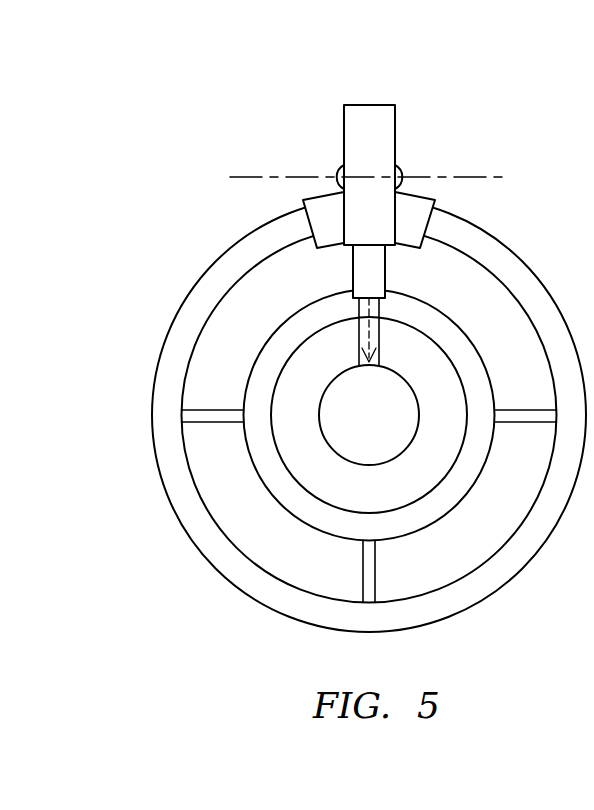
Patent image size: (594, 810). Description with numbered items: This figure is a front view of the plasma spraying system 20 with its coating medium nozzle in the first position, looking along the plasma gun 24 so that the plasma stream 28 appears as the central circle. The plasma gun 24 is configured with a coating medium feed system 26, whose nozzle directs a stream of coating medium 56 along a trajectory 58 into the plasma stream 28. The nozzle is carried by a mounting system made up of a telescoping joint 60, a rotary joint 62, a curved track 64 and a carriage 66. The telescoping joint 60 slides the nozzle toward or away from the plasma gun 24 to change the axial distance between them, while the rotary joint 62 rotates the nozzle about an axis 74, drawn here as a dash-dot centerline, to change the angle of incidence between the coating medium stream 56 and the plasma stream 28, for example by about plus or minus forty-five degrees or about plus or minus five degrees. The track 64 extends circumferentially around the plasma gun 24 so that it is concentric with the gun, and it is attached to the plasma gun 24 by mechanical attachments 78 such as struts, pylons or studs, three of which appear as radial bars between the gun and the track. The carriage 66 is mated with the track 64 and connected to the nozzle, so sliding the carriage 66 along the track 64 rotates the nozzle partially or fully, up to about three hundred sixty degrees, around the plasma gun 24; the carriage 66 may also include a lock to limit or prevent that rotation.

The plasma spraying system 20 is at (346, 335).
The plasma gun 24 is at (465, 495).
The coating medium feed system 26 is at (392, 211).
The plasma stream 28 is at (370, 467).
The coating medium stream 56 is at (380, 323).
The trajectory 58 is at (355, 340).
The telescoping joint 60 is at (340, 170).
The rotary joint 62 is at (372, 105).
The curved track 64 is at (193, 288).
The carriage 66 is at (435, 202).
The axis 74 is at (492, 176).
The mechanical attachments 78 is at (207, 422).